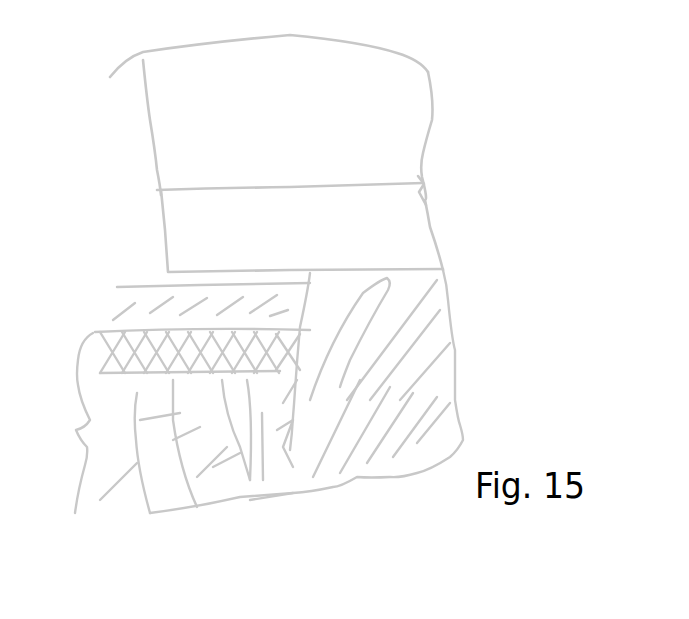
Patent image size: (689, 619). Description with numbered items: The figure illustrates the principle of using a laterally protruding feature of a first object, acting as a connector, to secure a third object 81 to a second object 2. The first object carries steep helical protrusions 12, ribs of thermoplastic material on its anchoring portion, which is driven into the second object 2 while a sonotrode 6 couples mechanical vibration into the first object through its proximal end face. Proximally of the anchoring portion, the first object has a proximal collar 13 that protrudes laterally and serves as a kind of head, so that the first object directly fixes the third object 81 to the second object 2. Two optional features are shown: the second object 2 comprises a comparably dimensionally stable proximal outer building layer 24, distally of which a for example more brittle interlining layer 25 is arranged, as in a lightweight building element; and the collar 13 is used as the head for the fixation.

The second object 2 is at (67, 423).
The sonotrode 6 is at (383, 100).
The helical protrusions 12 is at (368, 330).
The proximal collar 13 is at (230, 233).
The proximal outer building layer 24 is at (172, 352).
The interlining layer 25 is at (257, 453).
The third object 81 is at (143, 307).